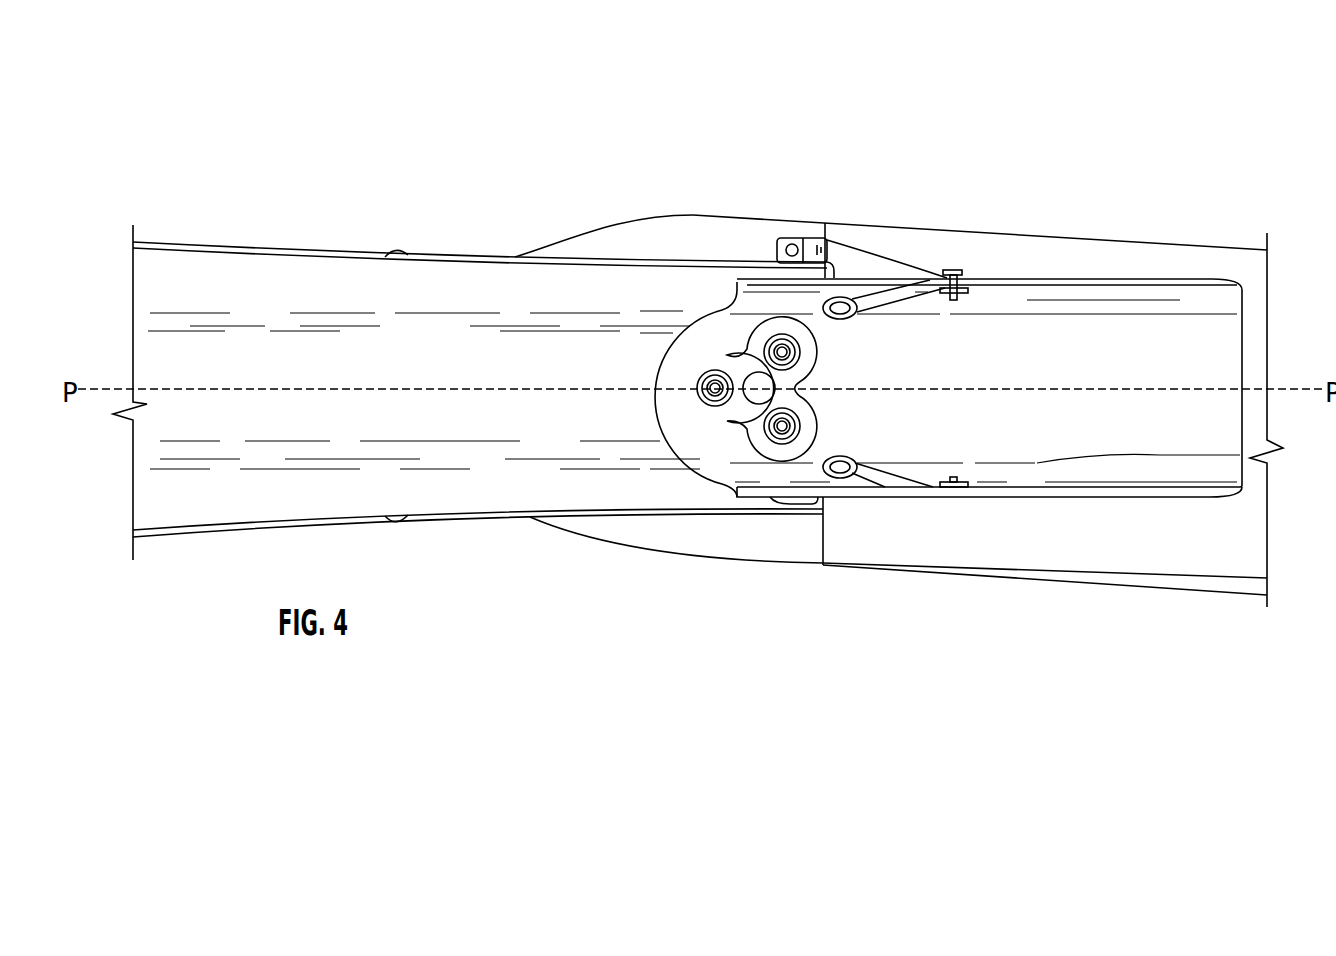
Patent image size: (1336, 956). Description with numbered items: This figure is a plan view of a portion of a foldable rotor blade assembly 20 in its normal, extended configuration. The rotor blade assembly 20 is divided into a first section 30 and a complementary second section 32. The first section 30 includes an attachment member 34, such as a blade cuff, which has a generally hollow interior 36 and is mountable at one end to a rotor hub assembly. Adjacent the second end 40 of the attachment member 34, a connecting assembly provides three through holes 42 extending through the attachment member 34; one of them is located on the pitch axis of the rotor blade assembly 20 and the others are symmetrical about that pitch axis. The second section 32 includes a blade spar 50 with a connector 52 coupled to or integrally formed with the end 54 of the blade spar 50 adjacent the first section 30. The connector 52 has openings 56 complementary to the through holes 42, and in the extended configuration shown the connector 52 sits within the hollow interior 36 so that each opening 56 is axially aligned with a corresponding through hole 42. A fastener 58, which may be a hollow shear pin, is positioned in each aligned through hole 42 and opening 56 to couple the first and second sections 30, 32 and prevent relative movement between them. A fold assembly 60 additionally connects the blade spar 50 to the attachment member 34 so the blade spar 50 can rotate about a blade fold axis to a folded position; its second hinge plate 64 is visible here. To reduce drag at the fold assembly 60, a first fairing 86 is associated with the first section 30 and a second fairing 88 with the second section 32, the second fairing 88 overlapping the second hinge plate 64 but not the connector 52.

The rotor blade assembly 20 is at (186, 156).
The first section 30 is at (327, 230).
The second section 32 is at (1176, 228).
The attachment member 34 is at (467, 257).
The hollow interior 36 is at (456, 429).
The second end 40 is at (810, 515).
The through hole 42 is at (732, 373).
The blade spar 50 is at (1045, 447).
The connector 52 is at (720, 447).
The end of the blade spar 54 is at (660, 420).
The opening 56 is at (732, 373).
The fastener 58 is at (760, 593).
The fold assembly 60 is at (824, 190).
The second hinge plate 64 is at (873, 272).
The first fairing 86 is at (637, 238).
The second fairing 88 is at (1065, 262).